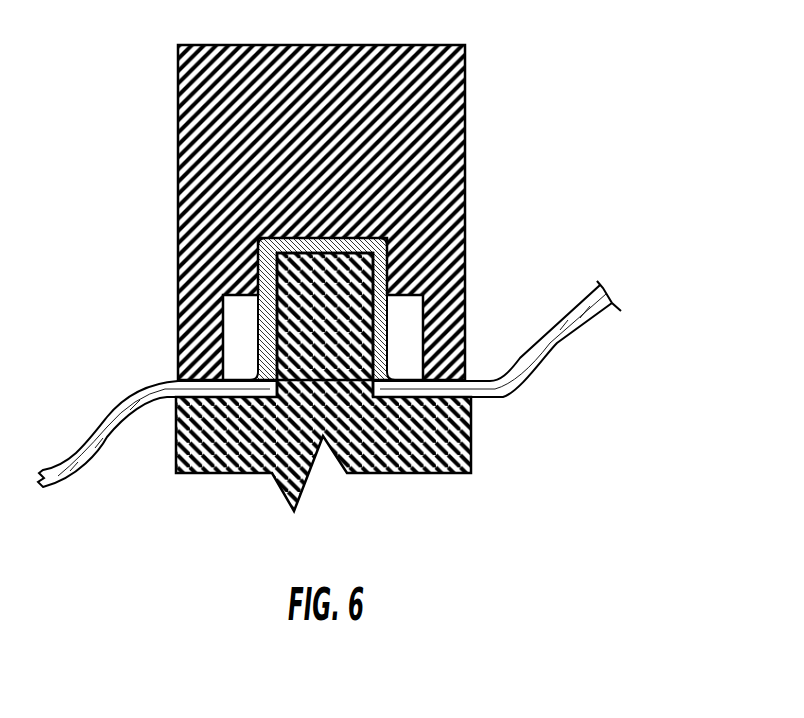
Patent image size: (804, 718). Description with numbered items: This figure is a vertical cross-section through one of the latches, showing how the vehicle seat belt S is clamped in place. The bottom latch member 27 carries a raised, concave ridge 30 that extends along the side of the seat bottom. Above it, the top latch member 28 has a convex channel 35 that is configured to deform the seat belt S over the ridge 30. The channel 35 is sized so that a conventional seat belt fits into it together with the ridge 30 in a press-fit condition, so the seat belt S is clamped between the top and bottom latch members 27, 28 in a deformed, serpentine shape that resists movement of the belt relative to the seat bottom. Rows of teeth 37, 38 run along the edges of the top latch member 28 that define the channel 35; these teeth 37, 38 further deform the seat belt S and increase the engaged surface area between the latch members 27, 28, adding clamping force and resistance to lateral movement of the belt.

The bottom latch member 27 is at (427, 473).
The top latch member 28 is at (435, 125).
The ridge 30 is at (307, 320).
The channel 35 is at (378, 238).
The teeth 37 is at (210, 397).
The teeth 38 is at (440, 397).
The seat belt S is at (538, 365).